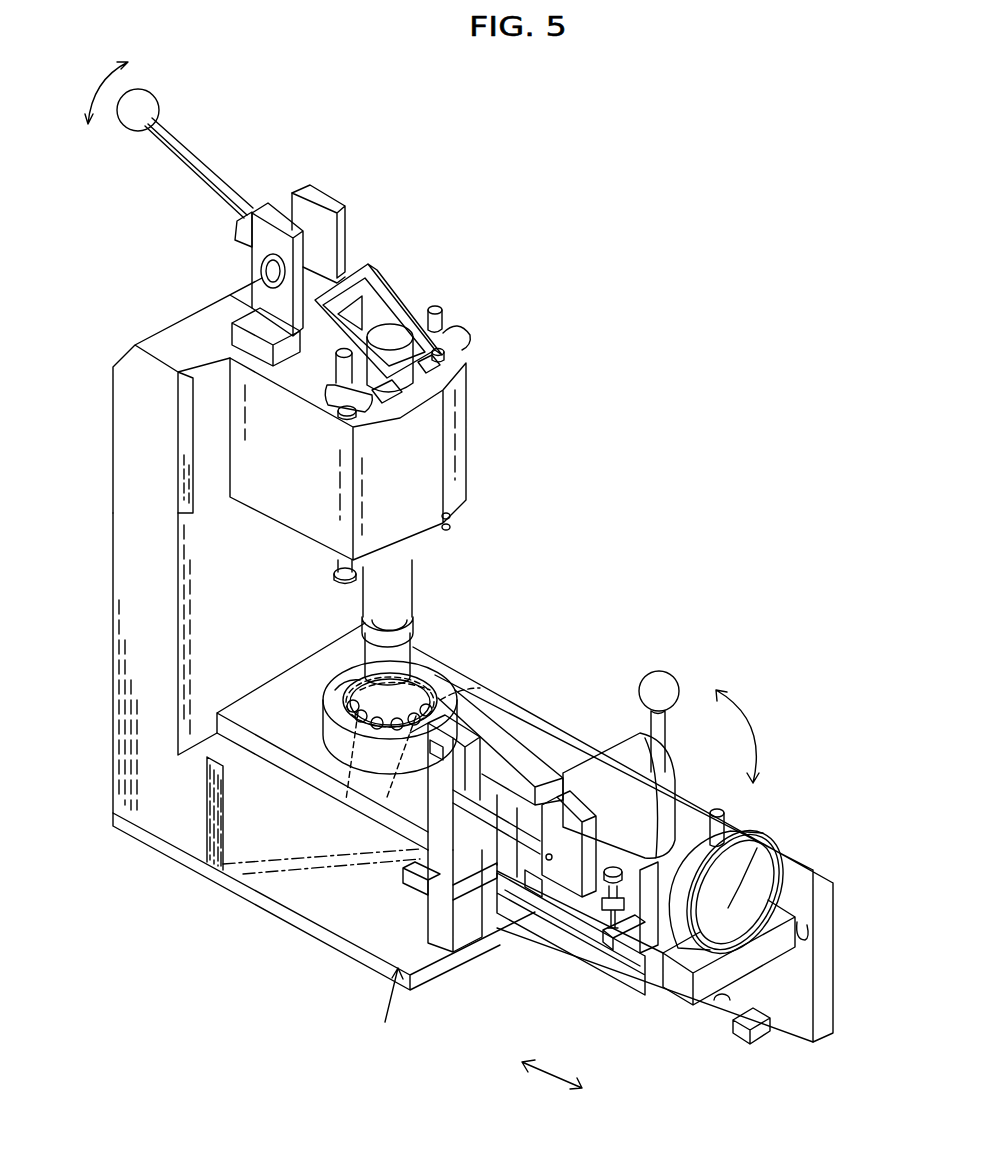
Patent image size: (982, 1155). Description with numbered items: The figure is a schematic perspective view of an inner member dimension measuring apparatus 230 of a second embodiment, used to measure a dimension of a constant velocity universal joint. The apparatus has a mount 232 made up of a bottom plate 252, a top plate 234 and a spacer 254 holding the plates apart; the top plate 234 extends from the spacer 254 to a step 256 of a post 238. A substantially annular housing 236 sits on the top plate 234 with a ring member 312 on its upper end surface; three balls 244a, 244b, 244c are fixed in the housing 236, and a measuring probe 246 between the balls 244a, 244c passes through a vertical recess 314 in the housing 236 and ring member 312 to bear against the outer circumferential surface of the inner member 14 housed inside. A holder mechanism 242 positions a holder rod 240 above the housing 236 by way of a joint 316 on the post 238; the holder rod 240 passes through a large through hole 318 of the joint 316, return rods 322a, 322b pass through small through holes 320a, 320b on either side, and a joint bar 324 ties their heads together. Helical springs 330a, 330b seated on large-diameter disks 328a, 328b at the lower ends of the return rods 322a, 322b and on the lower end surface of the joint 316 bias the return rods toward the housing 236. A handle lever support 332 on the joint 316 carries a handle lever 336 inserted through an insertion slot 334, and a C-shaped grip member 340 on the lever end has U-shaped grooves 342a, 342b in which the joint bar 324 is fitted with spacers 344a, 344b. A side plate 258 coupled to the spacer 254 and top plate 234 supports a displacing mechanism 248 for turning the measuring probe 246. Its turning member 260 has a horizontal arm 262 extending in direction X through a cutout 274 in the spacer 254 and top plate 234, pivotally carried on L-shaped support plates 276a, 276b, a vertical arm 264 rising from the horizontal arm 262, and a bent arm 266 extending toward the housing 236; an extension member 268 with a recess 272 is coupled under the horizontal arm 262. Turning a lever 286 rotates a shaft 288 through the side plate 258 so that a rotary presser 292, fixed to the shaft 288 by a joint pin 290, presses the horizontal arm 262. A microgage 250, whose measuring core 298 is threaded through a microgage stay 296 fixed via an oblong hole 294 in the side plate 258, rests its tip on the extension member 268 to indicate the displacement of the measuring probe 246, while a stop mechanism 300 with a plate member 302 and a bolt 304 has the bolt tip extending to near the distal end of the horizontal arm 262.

The inner member dimension measuring apparatus 230 is at (628, 147).
The inner member 14 is at (447, 692).
The mount 232 is at (388, 1003).
The top plate 234 is at (257, 703).
The housing 236 is at (323, 724).
The post 238 is at (145, 608).
The holder rod 240 is at (397, 588).
The holder mechanism 242 is at (477, 332).
The ball 244a is at (346, 800).
The ball 244b is at (417, 655).
The ball 244c is at (490, 690).
The measuring probe 246 is at (400, 734).
The displacing mechanism 248 is at (706, 788).
The microgage 250 is at (770, 853).
The bottom plate 252 is at (271, 887).
The spacer 254 is at (457, 942).
The step 256 is at (207, 742).
The side plate 258 is at (803, 1013).
The turning member 260 is at (500, 905).
The horizontal arm 262 is at (607, 912).
The vertical arm 264 is at (470, 780).
The bent arm 266 is at (468, 722).
The extension member 268 is at (748, 1025).
The recess 272 is at (633, 930).
The cutout 274 is at (512, 783).
The L-shaped support plate 276a is at (403, 878).
The L-shaped support plate 276b is at (485, 893).
The lever 286 is at (657, 682).
The shaft 288 is at (600, 800).
The joint pin 290 is at (547, 895).
The rotary presser 292 is at (577, 892).
The oblong hole 294 is at (798, 920).
The microgage stay 296 is at (753, 957).
The measuring core 298 is at (740, 1034).
The stop mechanism 300 is at (649, 902).
The plate member 302 is at (720, 1002).
The bolt 304 is at (612, 867).
The ring member 312 is at (340, 677).
The vertical recess 314 is at (428, 768).
The joint 316 is at (203, 452).
The large through hole 318 is at (400, 417).
The small through hole 320a is at (340, 420).
The small through hole 320b is at (446, 353).
The return rod 322a is at (325, 375).
The return rod 322b is at (438, 316).
The joint bar 324 is at (460, 343).
The large-diameter disk 328a is at (340, 584).
The large-diameter disk 328b is at (449, 528).
The helical spring 330a is at (336, 566).
The helical spring 330b is at (449, 516).
The handle lever support 332 is at (335, 215).
The insertion slot 334 is at (306, 212).
The handle lever 336 is at (205, 172).
The grip member 340 is at (397, 318).
The U-shaped groove 342a is at (245, 318).
The U-shaped groove 342b is at (392, 327).
The spacer 344a is at (388, 407).
The spacer 344b is at (430, 366).